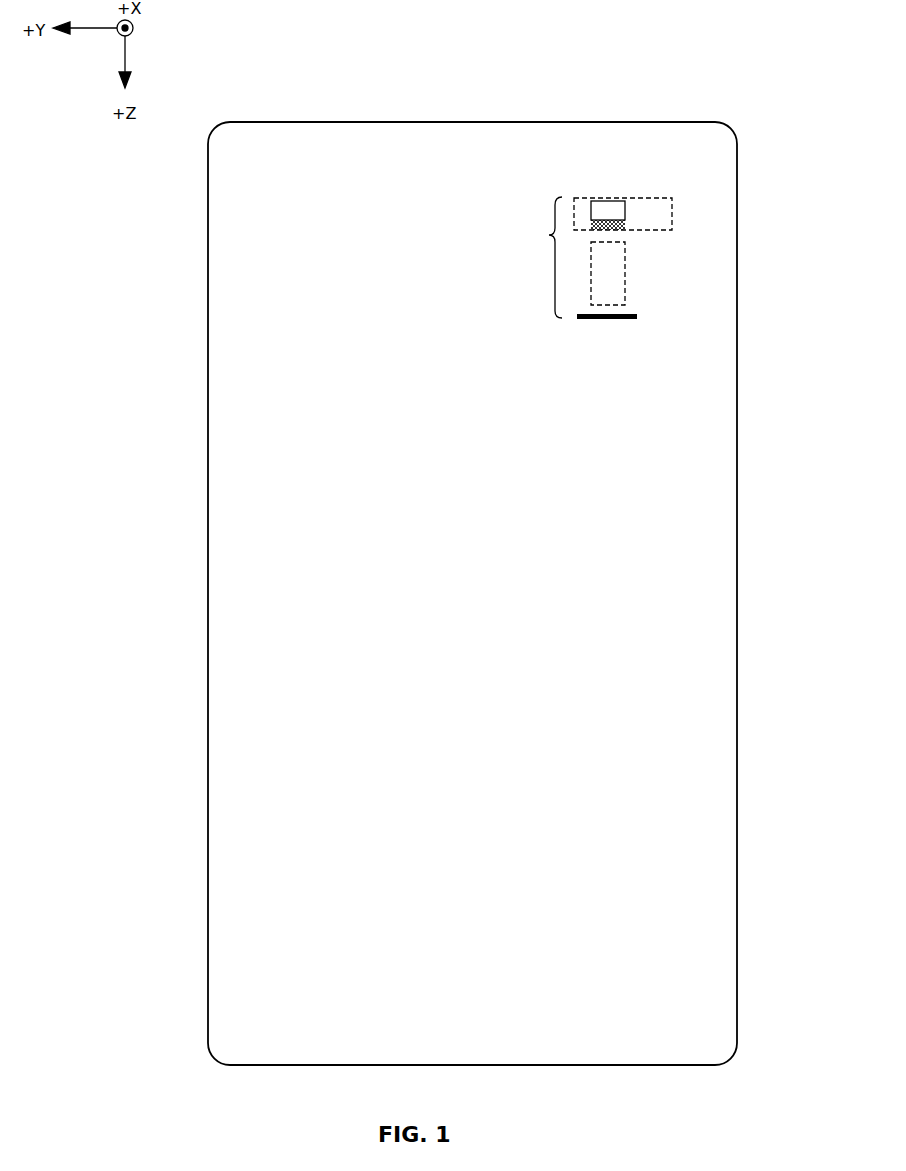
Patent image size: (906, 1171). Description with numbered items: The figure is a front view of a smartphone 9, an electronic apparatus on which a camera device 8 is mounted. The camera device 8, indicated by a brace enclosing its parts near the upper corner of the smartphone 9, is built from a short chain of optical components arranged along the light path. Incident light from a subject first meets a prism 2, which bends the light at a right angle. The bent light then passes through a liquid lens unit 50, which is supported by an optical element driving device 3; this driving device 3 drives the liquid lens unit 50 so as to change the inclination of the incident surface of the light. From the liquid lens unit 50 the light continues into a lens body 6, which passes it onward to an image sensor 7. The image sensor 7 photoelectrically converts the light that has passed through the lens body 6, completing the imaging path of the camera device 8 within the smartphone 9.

The prism 2 is at (608, 206).
The optical element driving device 3 is at (672, 207).
The liquid lens unit 50 is at (615, 232).
The lens body 6 is at (625, 273).
The image sensor 7 is at (637, 315).
The camera device 8 is at (549, 235).
The smartphone 9 is at (208, 743).